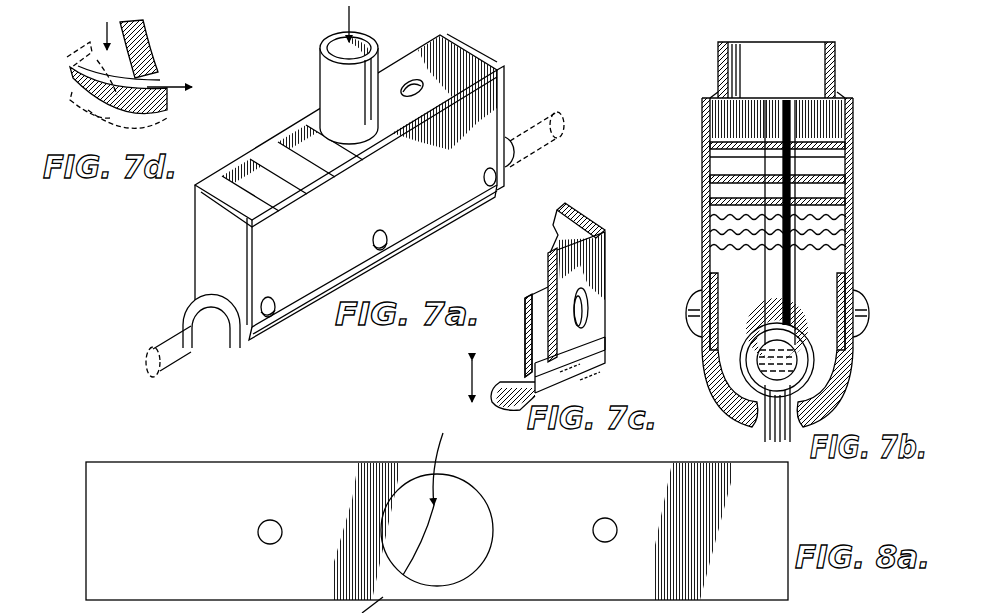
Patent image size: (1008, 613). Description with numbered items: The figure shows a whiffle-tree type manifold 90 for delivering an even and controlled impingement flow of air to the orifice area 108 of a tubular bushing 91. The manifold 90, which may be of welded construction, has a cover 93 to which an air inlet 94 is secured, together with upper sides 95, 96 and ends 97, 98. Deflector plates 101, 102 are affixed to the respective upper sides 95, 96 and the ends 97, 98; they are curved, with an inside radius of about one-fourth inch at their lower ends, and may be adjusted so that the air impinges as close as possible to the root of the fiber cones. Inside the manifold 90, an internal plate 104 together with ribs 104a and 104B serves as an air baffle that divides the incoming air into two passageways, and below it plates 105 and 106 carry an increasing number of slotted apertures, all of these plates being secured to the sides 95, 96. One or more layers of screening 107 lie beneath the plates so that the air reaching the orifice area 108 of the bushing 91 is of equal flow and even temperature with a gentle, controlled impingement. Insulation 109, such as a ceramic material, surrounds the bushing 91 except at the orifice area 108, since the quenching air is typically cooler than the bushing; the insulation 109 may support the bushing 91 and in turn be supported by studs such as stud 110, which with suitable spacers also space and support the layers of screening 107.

In FIG. 7A, the whiffle-tree type manifold 90 is at (506, 86).
In FIG. 7B, the whiffle-tree type manifold 90 is at (858, 92).
In FIG. 7A, the tubular bushing 91 is at (192, 363).
In FIG. 7B, the tubular bushing 91 is at (805, 367).
In FIG. 7A, the cover 93 is at (420, 82).
In FIG. 7B, the cover 93 is at (710, 93).
In FIG. 8A, the cover 93 is at (775, 530).
In FIG. 7A, the air inlet 94 is at (376, 58).
In FIG. 7B, the air inlet 94 is at (836, 56).
In FIG. 7A, the upper side 95 is at (447, 192).
In FIG. 7C, the upper side 95 is at (592, 252).
In FIG. 7B, the upper side 95 is at (850, 166).
In FIG. 7A, the upper side 96 is at (196, 241).
In FIG. 7B, the upper side 96 is at (708, 125).
In FIG. 7A, the end 97 is at (216, 272).
In FIG. 7C, the end 98 is at (585, 218).
In FIG. 7B, the end 98 is at (820, 266).
In FIG. 7A, the deflector plate 101 is at (300, 313).
In FIG. 7C, the deflector plate 101 is at (570, 374).
In FIG. 7B, the deflector plate 101 is at (852, 360).
In FIG. 7D, the deflector plate 102 is at (130, 97).
In FIG. 7B, the deflector plate 102 is at (712, 362).
In FIG. 7A, the internal plate 104 is at (293, 158).
In FIG. 7B, the internal plate 104 is at (813, 145).
In FIG. 7A, the rib 104a is at (253, 172).
In FIG. 7B, the rib 104B is at (820, 122).
In FIG. 7B, the plate 105 is at (735, 180).
In FIG. 7B, the plate 106 is at (820, 205).
In FIG. 7B, the screening 107 is at (830, 250).
In FIG. 7B, the orifice area 108 is at (767, 400).
In FIG. 7A, the insulation 109 is at (193, 303).
In FIG. 7B, the insulation 109 is at (740, 350).
In FIG. 7D, the stud 110 is at (133, 82).
In FIG. 7A, the stud 110 is at (458, 42).
In FIG. 7B, the stud 110 is at (778, 272).